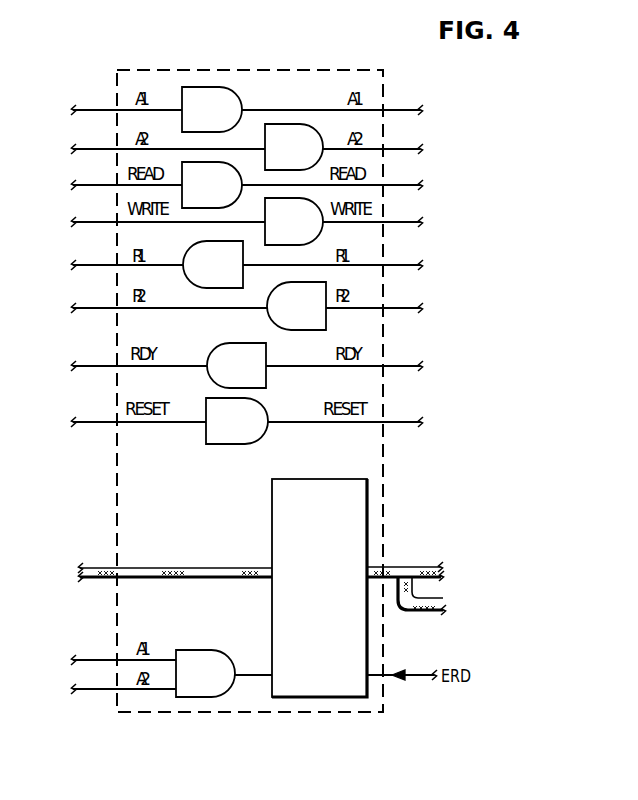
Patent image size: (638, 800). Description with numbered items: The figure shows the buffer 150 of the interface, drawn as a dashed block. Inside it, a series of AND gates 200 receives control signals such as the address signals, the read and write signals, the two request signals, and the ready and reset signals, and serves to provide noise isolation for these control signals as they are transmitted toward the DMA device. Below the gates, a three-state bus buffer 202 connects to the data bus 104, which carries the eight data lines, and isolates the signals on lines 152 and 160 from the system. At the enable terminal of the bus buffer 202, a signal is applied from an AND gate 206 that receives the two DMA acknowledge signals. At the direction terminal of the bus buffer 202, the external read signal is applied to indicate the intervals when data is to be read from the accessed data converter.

The buffer 150 is at (212, 71).
The AND gates 200 is at (214, 378).
The three-state bus buffer 202 is at (328, 479).
The AND gate 206 is at (221, 650).
The data bus 104 is at (105, 567).
The line 152 is at (421, 567).
The line 160 is at (428, 612).